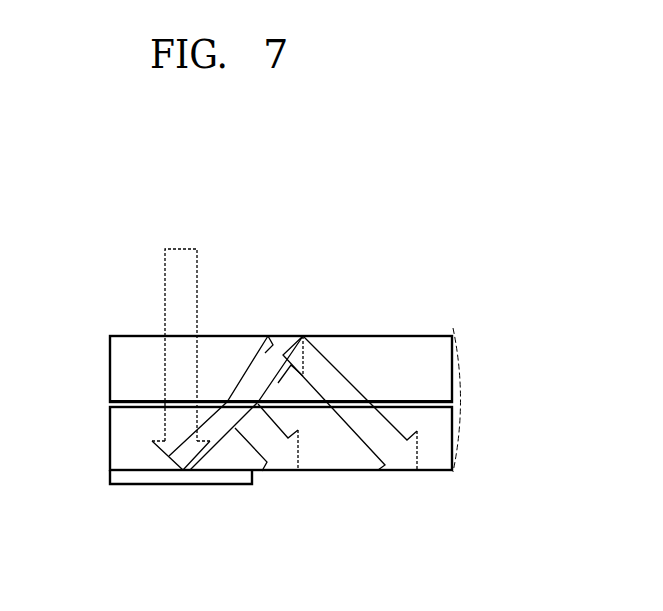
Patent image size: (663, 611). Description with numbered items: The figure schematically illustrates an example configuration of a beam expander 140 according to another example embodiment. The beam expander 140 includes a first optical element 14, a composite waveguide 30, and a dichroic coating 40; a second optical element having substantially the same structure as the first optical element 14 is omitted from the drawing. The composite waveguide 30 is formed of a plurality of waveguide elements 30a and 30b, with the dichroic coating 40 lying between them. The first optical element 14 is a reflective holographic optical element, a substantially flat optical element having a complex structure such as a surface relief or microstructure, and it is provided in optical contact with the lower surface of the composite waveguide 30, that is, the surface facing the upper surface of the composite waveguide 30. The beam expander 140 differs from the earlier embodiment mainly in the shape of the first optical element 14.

The beam expander 140 is at (322, 340).
The composite waveguide 30 is at (315, 400).
The waveguide element 30a is at (443, 443).
The waveguide element 30b is at (443, 368).
The dichroic coating 40 is at (110, 403).
The first optical element 14 is at (110, 478).